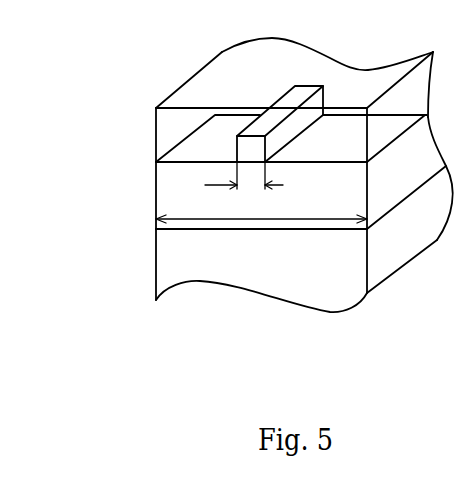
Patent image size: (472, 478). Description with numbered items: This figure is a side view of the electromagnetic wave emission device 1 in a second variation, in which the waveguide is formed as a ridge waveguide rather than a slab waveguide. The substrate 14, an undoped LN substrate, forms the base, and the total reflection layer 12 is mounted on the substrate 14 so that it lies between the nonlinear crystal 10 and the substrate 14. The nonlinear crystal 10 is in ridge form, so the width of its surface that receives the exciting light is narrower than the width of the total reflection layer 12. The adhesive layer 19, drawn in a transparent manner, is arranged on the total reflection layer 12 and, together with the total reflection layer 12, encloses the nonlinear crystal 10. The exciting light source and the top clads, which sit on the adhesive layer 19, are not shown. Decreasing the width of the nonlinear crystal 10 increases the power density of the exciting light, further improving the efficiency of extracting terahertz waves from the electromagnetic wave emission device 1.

The electromagnetic wave emission device 1 is at (103, 72).
The adhesive layer 19 is at (156, 122).
The nonlinear crystal 10 is at (247, 148).
The total reflection layer 12 is at (156, 195).
The substrate 14 is at (156, 269).